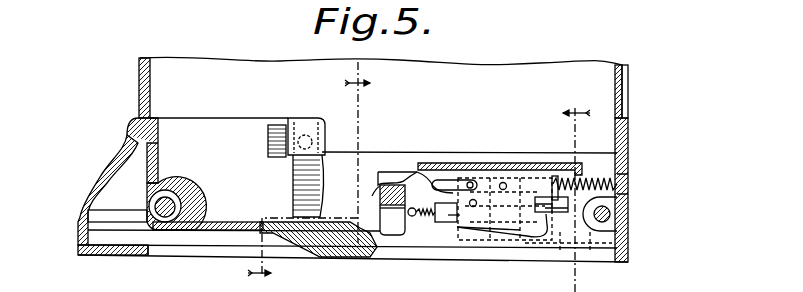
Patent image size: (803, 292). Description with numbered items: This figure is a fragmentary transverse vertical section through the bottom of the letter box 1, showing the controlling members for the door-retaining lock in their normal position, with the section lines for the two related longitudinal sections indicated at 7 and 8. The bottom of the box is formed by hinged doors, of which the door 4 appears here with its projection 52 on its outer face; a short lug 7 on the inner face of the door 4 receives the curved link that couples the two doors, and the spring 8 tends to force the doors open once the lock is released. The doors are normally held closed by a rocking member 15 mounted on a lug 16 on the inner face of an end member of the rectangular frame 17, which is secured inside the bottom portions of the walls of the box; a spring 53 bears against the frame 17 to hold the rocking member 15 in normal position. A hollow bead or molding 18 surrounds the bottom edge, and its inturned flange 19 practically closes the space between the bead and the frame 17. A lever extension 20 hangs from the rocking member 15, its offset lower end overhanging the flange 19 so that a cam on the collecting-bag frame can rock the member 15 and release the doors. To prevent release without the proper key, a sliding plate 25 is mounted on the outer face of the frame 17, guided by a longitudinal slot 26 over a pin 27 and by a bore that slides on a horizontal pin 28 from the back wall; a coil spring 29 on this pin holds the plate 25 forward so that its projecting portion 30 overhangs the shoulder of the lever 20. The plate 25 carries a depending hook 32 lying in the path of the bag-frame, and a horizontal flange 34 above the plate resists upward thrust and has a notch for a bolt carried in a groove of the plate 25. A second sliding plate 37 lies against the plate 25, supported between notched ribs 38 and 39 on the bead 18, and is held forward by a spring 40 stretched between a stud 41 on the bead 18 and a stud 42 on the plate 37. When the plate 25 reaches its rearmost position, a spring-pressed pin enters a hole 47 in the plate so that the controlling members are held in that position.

The letter box 1 is at (576, 85).
The hinged door 4 is at (220, 223).
The short lug or projection 7 is at (309, 177).
The spring 8 is at (576, 190).
The rocking member 15 is at (302, 138).
The lug or ear 16 is at (268, 134).
The rectangular frame 17 is at (157, 130).
The hollow bead or molding 18 is at (97, 178).
The inturned bottom flange 19 is at (163, 252).
The lever extension 20 is at (364, 199).
The sliding plate 25 is at (516, 184).
The longitudinal slot 26 is at (452, 182).
The pin or stud 27 is at (475, 200).
The horizontal pin 28 is at (592, 178).
The coil spring 29 is at (627, 178).
The projecting portion 30 is at (397, 180).
The depending hook 32 is at (534, 247).
The horizontal flange or shelf 34 is at (434, 163).
The sliding plate 37 is at (448, 216).
The notched rib 38 is at (488, 240).
The notched rib 39 is at (562, 212).
The spring 40 is at (427, 217).
The stud 41 is at (405, 233).
The stud 42 is at (440, 222).
The hole 47 is at (505, 180).
The projection 52 is at (350, 240).
The spring 53 is at (303, 168).